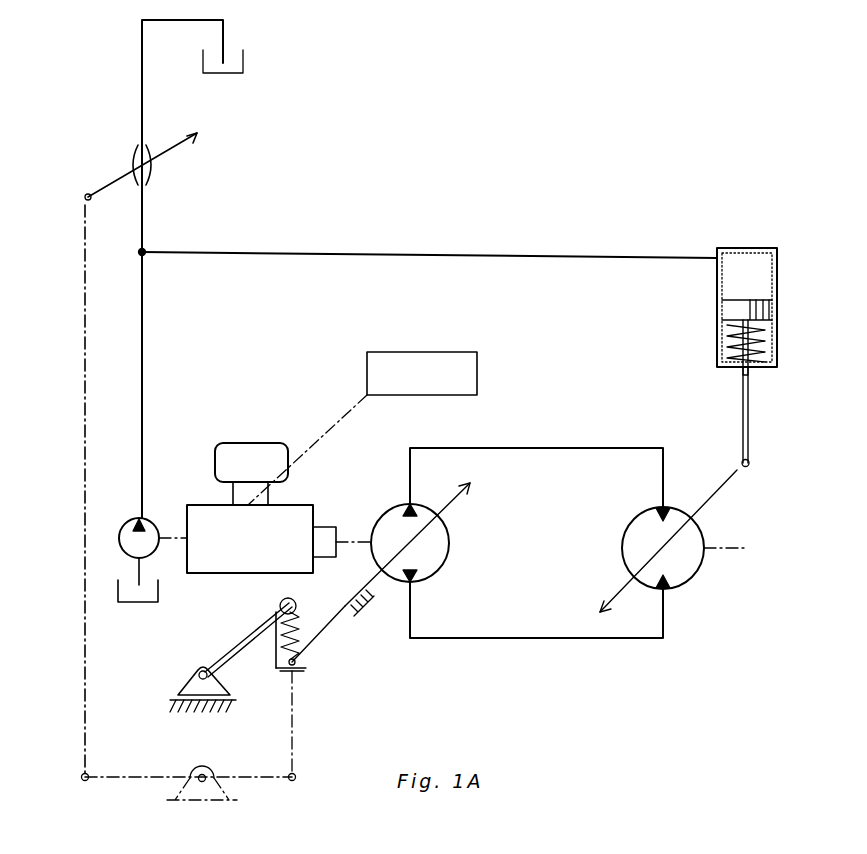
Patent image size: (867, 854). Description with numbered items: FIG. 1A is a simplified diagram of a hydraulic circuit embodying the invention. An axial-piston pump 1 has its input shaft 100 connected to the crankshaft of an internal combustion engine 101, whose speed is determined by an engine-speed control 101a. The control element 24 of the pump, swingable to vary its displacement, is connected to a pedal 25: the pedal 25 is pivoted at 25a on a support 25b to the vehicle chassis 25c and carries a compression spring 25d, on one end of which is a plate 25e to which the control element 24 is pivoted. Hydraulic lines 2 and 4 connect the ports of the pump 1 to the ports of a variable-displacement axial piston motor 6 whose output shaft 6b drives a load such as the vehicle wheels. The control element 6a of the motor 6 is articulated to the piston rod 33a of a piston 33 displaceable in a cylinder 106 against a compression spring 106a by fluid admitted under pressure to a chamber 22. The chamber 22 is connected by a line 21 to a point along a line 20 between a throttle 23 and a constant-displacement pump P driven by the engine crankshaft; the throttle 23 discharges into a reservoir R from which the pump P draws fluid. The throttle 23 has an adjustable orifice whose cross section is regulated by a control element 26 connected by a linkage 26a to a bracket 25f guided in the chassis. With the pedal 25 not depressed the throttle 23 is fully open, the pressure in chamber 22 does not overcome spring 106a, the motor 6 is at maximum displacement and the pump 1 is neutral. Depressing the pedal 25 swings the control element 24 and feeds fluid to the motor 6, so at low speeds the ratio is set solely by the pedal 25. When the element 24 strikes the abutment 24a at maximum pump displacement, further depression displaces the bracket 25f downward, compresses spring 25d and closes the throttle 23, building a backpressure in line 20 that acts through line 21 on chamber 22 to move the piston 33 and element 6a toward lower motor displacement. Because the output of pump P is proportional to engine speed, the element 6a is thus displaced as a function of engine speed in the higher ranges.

The axial-piston pump 1 is at (450, 546).
The hydraulic line 2 is at (537, 448).
The hydraulic line 4 is at (537, 638).
The variable-displacement axial piston motor 6 is at (623, 530).
The control element of the motor 6a is at (728, 479).
The output shaft 6b is at (742, 552).
The line 20 is at (142, 348).
The line 21 is at (450, 256).
The chamber 22 is at (762, 272).
The throttle 23 is at (153, 178).
The control element 24 is at (329, 626).
The abutment 24a is at (368, 614).
The pedal 25 is at (238, 649).
The pivot 25a is at (198, 671).
The support 25b is at (177, 691).
The vehicle chassis 25c is at (205, 712).
The compression spring 25d is at (302, 616).
The plate 25e is at (306, 668).
The bracket 25f is at (274, 668).
The control element 26 is at (107, 186).
The linkage 26a is at (85, 733).
The piston 33 is at (775, 310).
The piston rod 33a is at (750, 423).
The input shaft 100 is at (360, 541).
The internal combustion engine 101 is at (232, 444).
The engine-speed control 101a is at (477, 371).
The cylinder 106 is at (785, 350).
The compression spring 106a is at (730, 341).
The constant-displacement pump P is at (125, 520).
The reservoir R is at (243, 58).